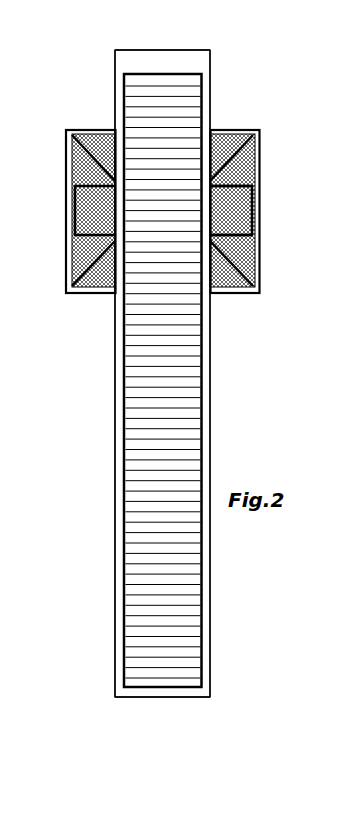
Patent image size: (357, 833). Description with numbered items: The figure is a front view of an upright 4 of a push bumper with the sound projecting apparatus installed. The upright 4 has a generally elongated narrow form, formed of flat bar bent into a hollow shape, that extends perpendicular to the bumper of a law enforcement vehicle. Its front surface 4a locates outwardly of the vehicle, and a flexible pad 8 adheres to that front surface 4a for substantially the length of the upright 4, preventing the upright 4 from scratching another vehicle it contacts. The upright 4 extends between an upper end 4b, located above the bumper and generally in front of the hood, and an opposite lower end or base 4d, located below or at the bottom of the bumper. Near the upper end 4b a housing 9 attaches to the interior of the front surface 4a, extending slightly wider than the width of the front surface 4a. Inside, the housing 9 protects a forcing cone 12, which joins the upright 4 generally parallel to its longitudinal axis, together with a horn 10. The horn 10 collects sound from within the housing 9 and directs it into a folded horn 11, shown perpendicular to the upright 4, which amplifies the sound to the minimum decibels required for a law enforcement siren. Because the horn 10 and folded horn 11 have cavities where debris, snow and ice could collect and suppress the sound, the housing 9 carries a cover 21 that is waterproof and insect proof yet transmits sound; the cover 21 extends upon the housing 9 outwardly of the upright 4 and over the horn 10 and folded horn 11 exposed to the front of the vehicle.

The upright 4 is at (220, 63).
The front surface 4a is at (122, 391).
The upper end 4b is at (153, 50).
The base 4d is at (168, 697).
The flexible pad 8 is at (138, 450).
The housing 9 is at (257, 135).
The horn 10 is at (243, 173).
The folded horn 11 is at (243, 212).
The cone 12 is at (82, 254).
The cover 21 is at (245, 253).